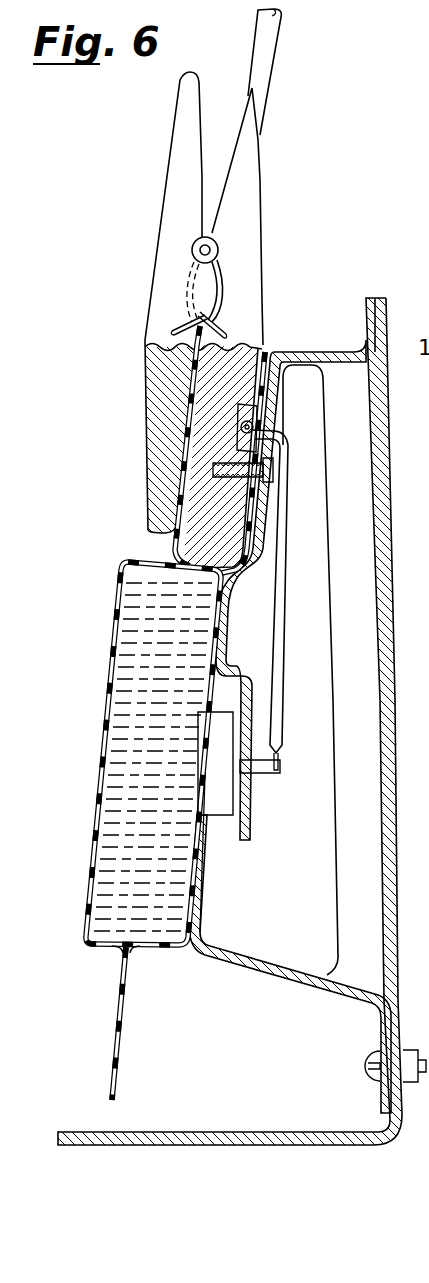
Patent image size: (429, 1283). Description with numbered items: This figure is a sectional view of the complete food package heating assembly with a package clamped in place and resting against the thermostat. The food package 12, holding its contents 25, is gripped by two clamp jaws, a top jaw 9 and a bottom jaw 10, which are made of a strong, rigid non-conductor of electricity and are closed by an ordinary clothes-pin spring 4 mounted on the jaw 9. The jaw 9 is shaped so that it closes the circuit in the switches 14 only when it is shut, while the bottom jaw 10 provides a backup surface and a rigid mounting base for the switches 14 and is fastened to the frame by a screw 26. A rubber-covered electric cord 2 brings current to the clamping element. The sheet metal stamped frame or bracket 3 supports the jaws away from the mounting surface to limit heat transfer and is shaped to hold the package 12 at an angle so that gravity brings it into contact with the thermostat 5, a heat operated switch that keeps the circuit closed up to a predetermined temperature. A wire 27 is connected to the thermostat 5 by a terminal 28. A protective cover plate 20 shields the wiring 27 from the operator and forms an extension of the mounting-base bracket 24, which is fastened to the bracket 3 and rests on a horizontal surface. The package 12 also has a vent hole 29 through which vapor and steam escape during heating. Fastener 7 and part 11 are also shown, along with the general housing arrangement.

The electric cord 2 is at (276, 34).
The frame or bracket 3 is at (366, 306).
The clothes-pin spring 4 is at (219, 254).
The thermostat 5 is at (211, 806).
The mounting screw 7 is at (368, 1060).
The top jaw 9 is at (180, 99).
The bottom jaw 10 is at (262, 195).
The housing 11 is at (419, 479).
The food package 12 is at (118, 686).
The switches 14 is at (419, 447).
The protective cover plate 20 is at (373, 409).
The mounting-base bracket 24 is at (196, 1135).
The package contents 25 is at (130, 617).
The screw 26 is at (272, 481).
The wire 27 is at (294, 582).
The terminal 28 is at (283, 769).
The vent hole 29 is at (142, 560).